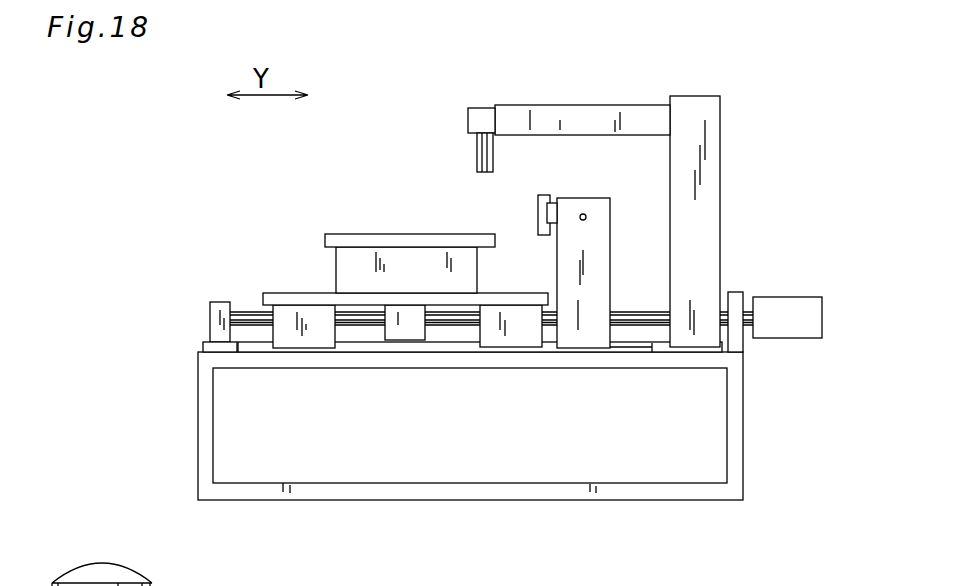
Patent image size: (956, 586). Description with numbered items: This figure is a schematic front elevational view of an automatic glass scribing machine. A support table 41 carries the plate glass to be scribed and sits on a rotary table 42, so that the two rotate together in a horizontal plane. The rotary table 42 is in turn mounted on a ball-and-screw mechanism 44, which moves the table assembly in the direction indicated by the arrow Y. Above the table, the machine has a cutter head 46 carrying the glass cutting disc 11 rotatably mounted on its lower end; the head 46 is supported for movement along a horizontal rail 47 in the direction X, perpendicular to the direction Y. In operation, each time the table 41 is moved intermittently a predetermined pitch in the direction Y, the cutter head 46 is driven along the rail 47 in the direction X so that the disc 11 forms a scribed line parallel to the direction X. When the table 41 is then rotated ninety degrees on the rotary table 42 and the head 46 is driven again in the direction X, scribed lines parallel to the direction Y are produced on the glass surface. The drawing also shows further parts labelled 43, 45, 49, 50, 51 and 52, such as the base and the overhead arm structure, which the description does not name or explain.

The glass cutting disc 11 is at (535, 223).
The support table 41 is at (365, 234).
The rotary table 42 is at (336, 274).
The drive motor 43 is at (789, 306).
The ball-and-screw mechanism 44 is at (257, 310).
The base 45 is at (257, 348).
The cutter head 46 is at (538, 213).
The horizontal rail 47 is at (548, 197).
The head 49 is at (414, 140).
The head 50 is at (477, 150).
The arm 51 is at (607, 193).
The arm 52 is at (557, 105).